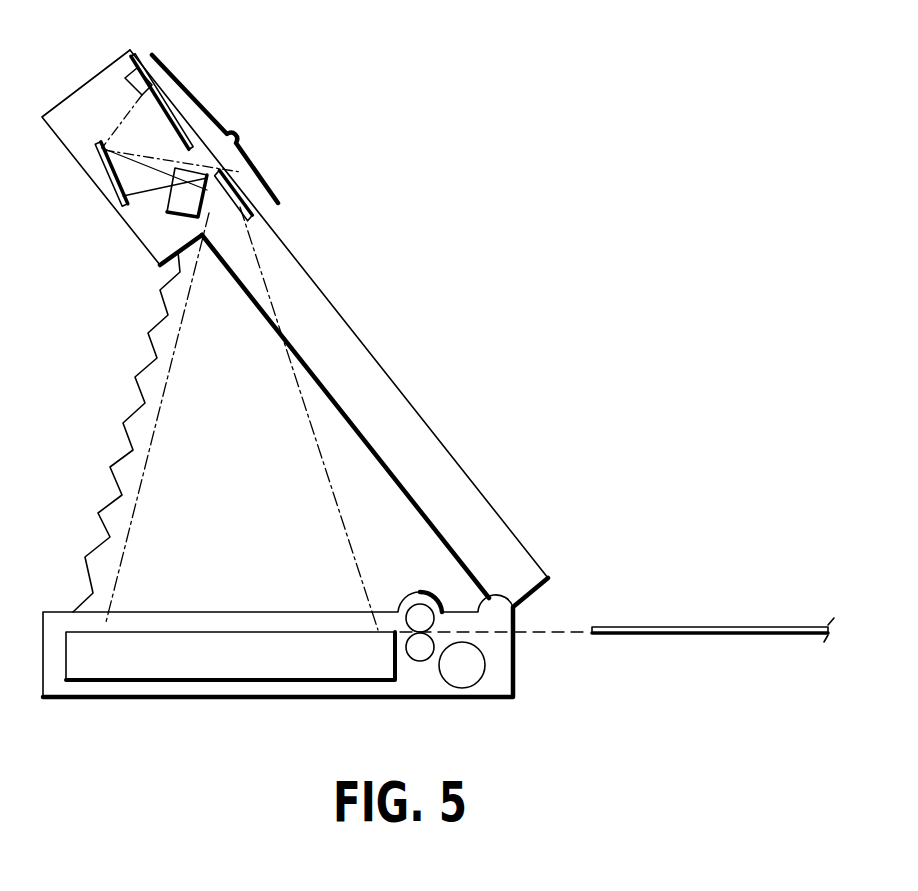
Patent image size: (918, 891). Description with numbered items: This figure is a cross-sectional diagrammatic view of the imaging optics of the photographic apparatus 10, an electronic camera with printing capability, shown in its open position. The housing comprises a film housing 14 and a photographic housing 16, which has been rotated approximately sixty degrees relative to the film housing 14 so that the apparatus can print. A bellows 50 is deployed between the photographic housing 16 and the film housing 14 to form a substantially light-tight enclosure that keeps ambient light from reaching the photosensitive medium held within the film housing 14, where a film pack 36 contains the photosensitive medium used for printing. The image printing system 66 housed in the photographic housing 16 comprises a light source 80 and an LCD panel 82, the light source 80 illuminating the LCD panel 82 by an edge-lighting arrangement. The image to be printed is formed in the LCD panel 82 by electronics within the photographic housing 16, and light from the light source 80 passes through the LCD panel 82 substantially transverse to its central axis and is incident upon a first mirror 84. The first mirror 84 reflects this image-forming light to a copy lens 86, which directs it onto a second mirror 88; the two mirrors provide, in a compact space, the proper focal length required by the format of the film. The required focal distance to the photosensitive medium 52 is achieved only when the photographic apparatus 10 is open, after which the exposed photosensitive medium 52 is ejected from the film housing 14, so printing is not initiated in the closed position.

The photographic apparatus 10 is at (360, 278).
The film housing 14 is at (412, 680).
The photographic housing 16 is at (425, 440).
The film pack 36 is at (222, 665).
The bellows 50 is at (134, 412).
The photosensitive medium 52 is at (702, 633).
The image printing system 66 is at (215, 129).
The light source 80 is at (137, 77).
The LCD panel 82 is at (158, 105).
The first mirror 84 is at (107, 172).
The copy lens 86 is at (187, 208).
The second mirror 88 is at (245, 200).